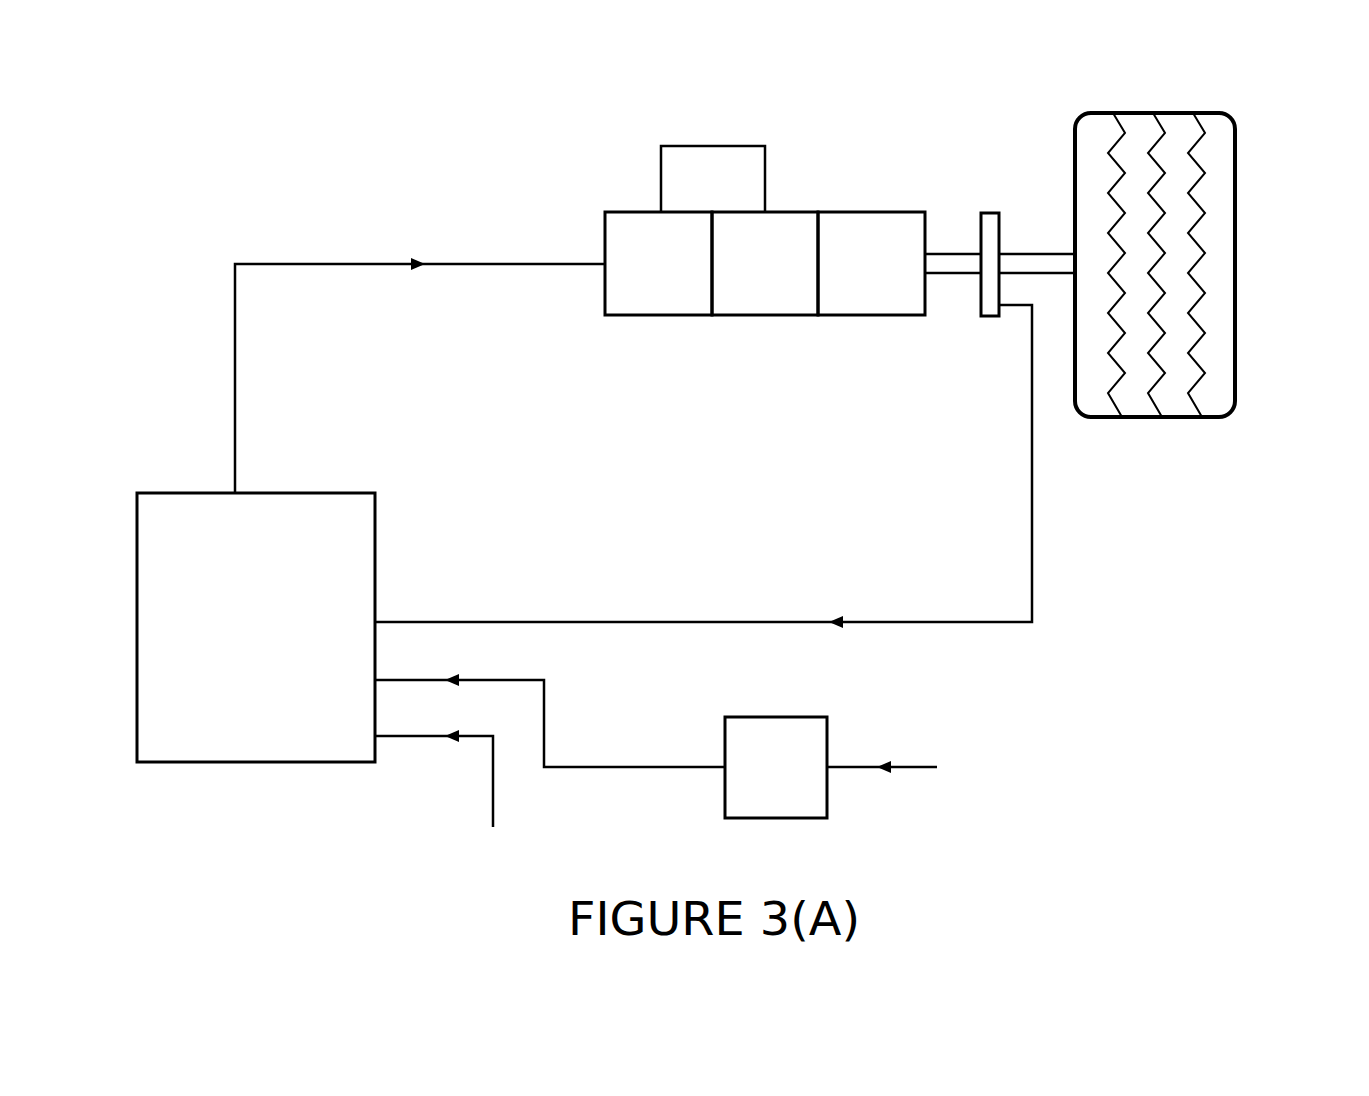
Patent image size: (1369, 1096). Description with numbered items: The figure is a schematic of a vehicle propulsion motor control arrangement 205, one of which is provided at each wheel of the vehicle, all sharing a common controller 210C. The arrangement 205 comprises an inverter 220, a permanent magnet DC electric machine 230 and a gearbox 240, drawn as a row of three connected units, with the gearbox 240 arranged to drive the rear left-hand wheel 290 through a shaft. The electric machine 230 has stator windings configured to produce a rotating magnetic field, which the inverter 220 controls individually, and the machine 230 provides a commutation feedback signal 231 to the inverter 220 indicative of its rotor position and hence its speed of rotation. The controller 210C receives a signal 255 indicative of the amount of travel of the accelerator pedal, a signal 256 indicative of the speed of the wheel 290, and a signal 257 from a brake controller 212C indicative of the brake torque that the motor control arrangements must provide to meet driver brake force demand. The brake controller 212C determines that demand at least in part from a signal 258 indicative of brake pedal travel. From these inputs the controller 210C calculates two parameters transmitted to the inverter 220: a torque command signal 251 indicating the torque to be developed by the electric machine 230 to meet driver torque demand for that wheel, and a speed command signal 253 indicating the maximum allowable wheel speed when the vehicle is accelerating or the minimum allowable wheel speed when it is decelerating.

The vehicle propulsion motor control arrangement 205 is at (880, 106).
The controller 210C is at (256, 627).
The brake controller 212C is at (776, 767).
The inverter 220 is at (660, 298).
The permanent magnet DC electric machine 230 is at (765, 298).
The commutation feedback signal 231 is at (652, 178).
The gearbox 240 is at (870, 298).
The torque command signal 251 is at (420, 341).
The speed command signal 253 is at (420, 341).
The accelerator pedal travel signal 255 is at (435, 766).
The wheel speed signal 256 is at (703, 485).
The brake torque signal 257 is at (550, 707).
The brake pedal travel signal 258 is at (882, 755).
The rear left wheel 290 is at (1237, 378).